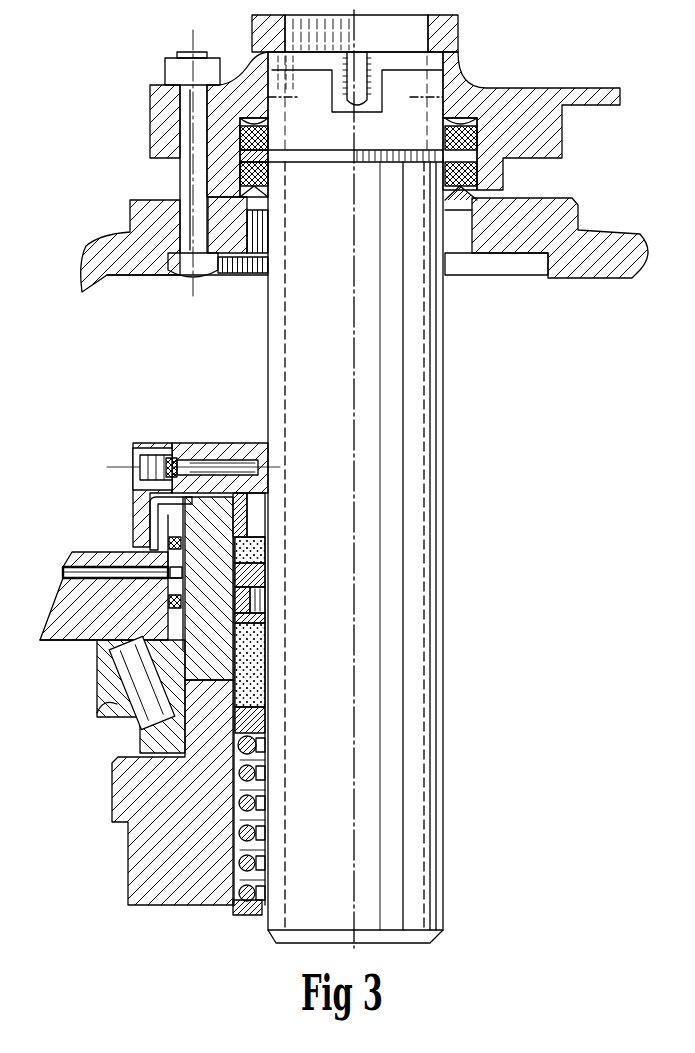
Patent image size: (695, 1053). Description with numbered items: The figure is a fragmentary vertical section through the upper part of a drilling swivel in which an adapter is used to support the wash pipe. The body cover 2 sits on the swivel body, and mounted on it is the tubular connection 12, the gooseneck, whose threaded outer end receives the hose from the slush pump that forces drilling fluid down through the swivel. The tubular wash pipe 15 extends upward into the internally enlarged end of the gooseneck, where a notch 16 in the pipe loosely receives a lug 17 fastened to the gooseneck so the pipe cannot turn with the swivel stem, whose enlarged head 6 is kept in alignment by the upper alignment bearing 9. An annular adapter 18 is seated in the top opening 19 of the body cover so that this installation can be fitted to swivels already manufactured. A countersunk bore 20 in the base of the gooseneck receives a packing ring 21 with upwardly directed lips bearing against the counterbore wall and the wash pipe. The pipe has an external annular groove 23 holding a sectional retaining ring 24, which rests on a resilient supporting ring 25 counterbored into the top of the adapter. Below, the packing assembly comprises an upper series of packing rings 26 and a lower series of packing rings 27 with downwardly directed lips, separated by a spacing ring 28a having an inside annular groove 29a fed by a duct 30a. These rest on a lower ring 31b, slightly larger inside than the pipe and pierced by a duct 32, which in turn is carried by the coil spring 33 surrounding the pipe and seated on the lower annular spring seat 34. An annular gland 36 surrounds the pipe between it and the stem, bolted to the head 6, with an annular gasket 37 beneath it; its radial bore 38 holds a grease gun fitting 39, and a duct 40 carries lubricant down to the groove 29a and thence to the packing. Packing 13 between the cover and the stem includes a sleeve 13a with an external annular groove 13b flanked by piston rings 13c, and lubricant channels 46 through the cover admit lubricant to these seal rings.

The body cover 2 is at (98, 242).
The head 6 is at (136, 850).
The upper alignment bearing 9 is at (95, 722).
The tubular connection 12 is at (460, 36).
The packing 13 is at (170, 603).
The sleeve 13a is at (178, 508).
The external annular groove 13b is at (170, 577).
The piston rings 13c is at (168, 540).
The wash pipe 15 is at (445, 396).
The notch 16 is at (337, 83).
The lug 17 is at (350, 65).
The annular adapter 18 is at (505, 181).
The top opening 19 is at (458, 248).
The countersunk bore 20 is at (480, 138).
The packing ring 21 is at (240, 148).
The external annular groove 23 is at (315, 162).
The sectional retaining ring 24 is at (240, 157).
The resilient supporting ring 25 is at (240, 172).
The upper series of packing rings 26 is at (262, 558).
The lower series of packing rings 27 is at (262, 667).
The spacing ring 28a is at (262, 618).
The inside annular groove 29a is at (262, 597).
The duct 30a is at (262, 573).
The lower ring 31b is at (262, 733).
The duct 32 is at (262, 707).
The coil spring 33 is at (232, 878).
The lower annular spring seat 34 is at (247, 916).
The annular gland 36 is at (160, 443).
The annular gasket 37 is at (236, 492).
The radial bore 38 is at (205, 459).
The fitting 39 is at (136, 480).
The duct 40 is at (228, 512).
The lubricant channels 46 is at (60, 570).